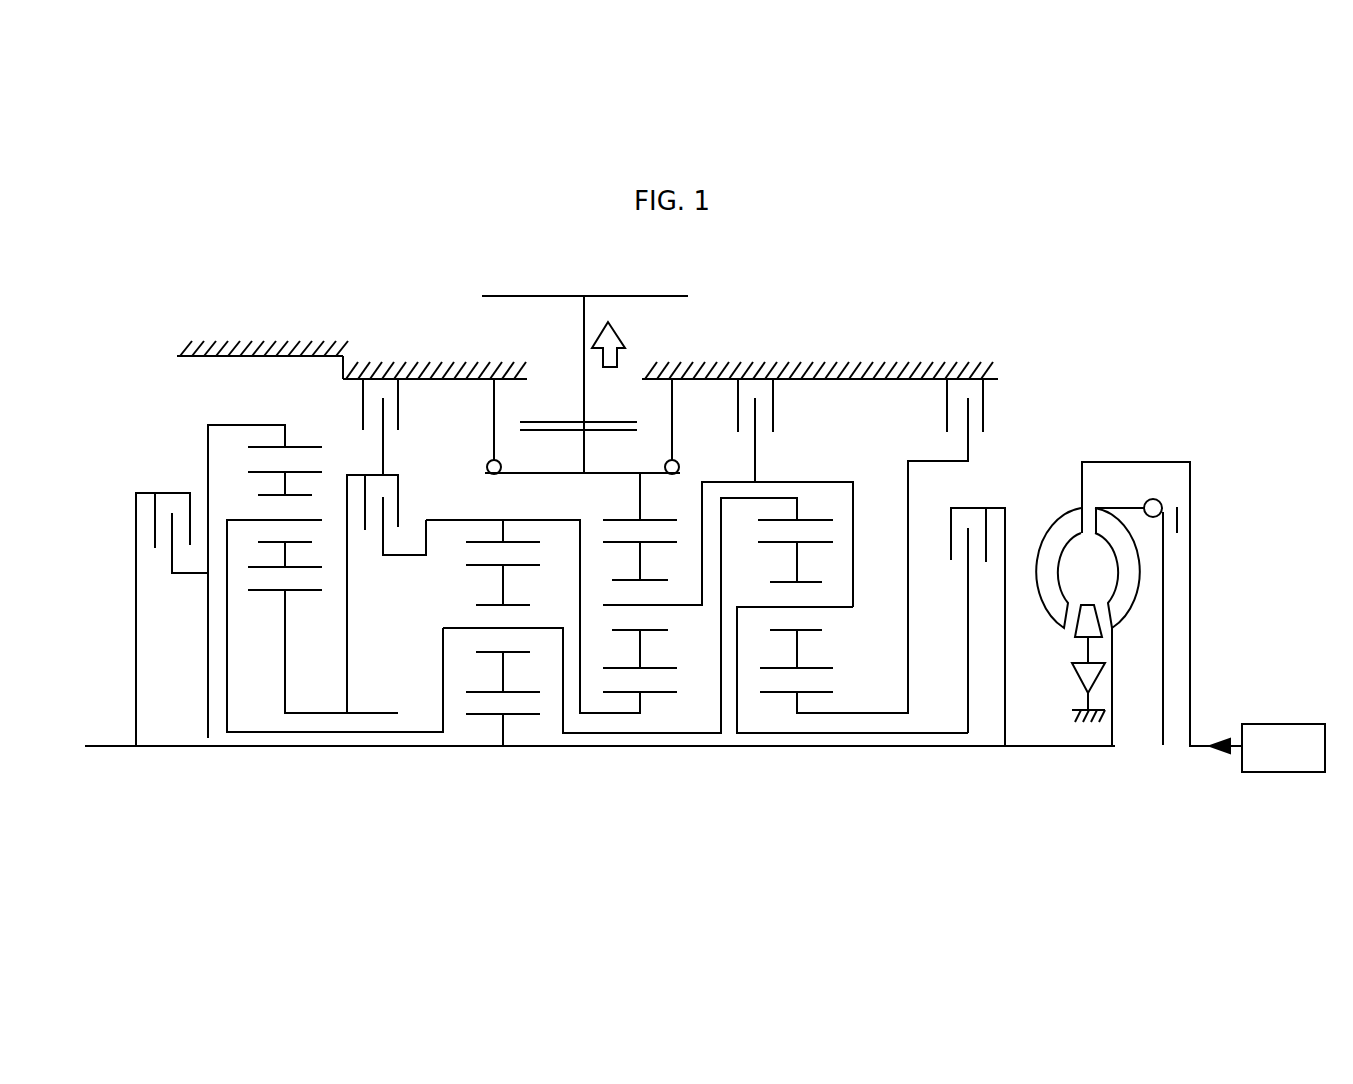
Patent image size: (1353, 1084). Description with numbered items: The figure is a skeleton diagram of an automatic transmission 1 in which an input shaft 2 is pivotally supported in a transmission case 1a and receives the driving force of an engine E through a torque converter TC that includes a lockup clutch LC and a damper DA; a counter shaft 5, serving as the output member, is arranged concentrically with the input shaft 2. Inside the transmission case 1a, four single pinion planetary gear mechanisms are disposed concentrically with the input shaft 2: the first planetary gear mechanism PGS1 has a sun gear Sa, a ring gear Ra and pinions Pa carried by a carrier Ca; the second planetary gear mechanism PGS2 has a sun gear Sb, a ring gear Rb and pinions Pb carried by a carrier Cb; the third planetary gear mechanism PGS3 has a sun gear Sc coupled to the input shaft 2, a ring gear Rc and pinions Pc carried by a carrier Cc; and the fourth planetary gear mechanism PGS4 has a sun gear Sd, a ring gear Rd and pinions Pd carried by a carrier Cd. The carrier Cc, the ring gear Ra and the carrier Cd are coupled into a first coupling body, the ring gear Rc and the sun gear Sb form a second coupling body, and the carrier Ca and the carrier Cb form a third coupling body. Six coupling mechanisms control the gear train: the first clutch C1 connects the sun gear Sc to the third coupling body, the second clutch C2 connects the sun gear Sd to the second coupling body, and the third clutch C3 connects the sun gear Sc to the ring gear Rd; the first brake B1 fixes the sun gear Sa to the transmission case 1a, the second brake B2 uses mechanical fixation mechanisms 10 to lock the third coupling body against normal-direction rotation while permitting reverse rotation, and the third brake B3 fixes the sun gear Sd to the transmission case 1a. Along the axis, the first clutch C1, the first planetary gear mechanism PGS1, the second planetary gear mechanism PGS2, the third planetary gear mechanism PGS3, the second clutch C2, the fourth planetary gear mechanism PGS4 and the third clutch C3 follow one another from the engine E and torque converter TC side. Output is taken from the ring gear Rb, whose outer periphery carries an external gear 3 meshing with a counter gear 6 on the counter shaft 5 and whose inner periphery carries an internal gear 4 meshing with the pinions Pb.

The automatic transmission 1 is at (745, 298).
The transmission case 1a is at (503, 362).
The input shaft 2 is at (1030, 748).
The external gear 3 is at (630, 432).
The internal gear 4 is at (622, 520).
The counter shaft 5 is at (662, 296).
The counter gear 6 is at (628, 420).
The mechanical fixation mechanism 10 is at (815, 430).
The first brake B1 is at (984, 400).
The second brake B2 is at (774, 400).
The third brake B3 is at (399, 400).
The first clutch C1 is at (985, 508).
The second clutch C2 is at (385, 556).
The third clutch C3 is at (168, 493).
The first planetary gear mechanism PGS1 is at (846, 602).
The second planetary gear mechanism PGS2 is at (702, 640).
The third planetary gear mechanism PGS3 is at (609, 652).
The fourth planetary gear mechanism PGS4 is at (325, 548).
The sun gear Sa is at (815, 693).
The ring gear Ra is at (825, 520).
The pinion Pa is at (825, 672).
The carrier Ca is at (833, 608).
The sun gear Sb is at (660, 693).
The ring gear Rb is at (641, 489).
The pinion Pb is at (652, 672).
The carrier Cb is at (668, 608).
The sun gear Sc is at (523, 715).
The ring gear Rc is at (481, 542).
The pinion Pc is at (520, 691).
The carrier Cc is at (546, 628).
The sun gear Sd is at (262, 591).
The ring gear Rd is at (306, 447).
The pinion Pd is at (305, 591).
The carrier Cd is at (243, 520).
The torque converter TC is at (1064, 490).
The damper DA is at (1152, 499).
The lockup clutch LC is at (1178, 518).
The engine E is at (1270, 724).